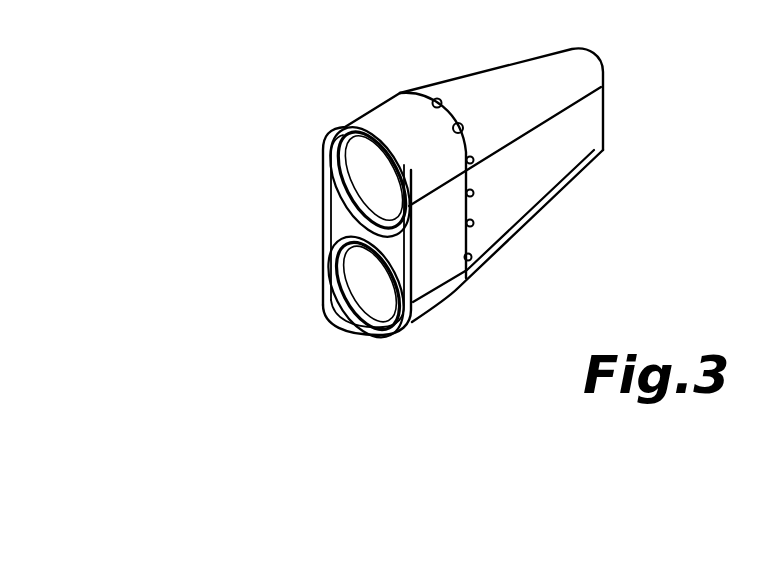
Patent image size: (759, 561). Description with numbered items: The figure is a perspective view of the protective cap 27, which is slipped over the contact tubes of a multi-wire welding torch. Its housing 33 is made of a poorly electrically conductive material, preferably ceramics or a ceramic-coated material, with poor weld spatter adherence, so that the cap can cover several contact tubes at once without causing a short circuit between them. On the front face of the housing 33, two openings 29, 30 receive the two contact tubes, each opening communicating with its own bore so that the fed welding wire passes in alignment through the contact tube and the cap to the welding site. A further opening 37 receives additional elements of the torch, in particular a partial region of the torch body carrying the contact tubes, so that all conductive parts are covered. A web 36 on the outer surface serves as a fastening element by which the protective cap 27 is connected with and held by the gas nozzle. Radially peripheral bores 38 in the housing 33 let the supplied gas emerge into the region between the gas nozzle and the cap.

The protective cap 27 is at (301, 104).
The opening 29 is at (382, 168).
The opening 30 is at (382, 260).
The housing 33 is at (568, 130).
The web 36 is at (440, 247).
The further opening 37 is at (362, 202).
The bores 38 is at (462, 118).